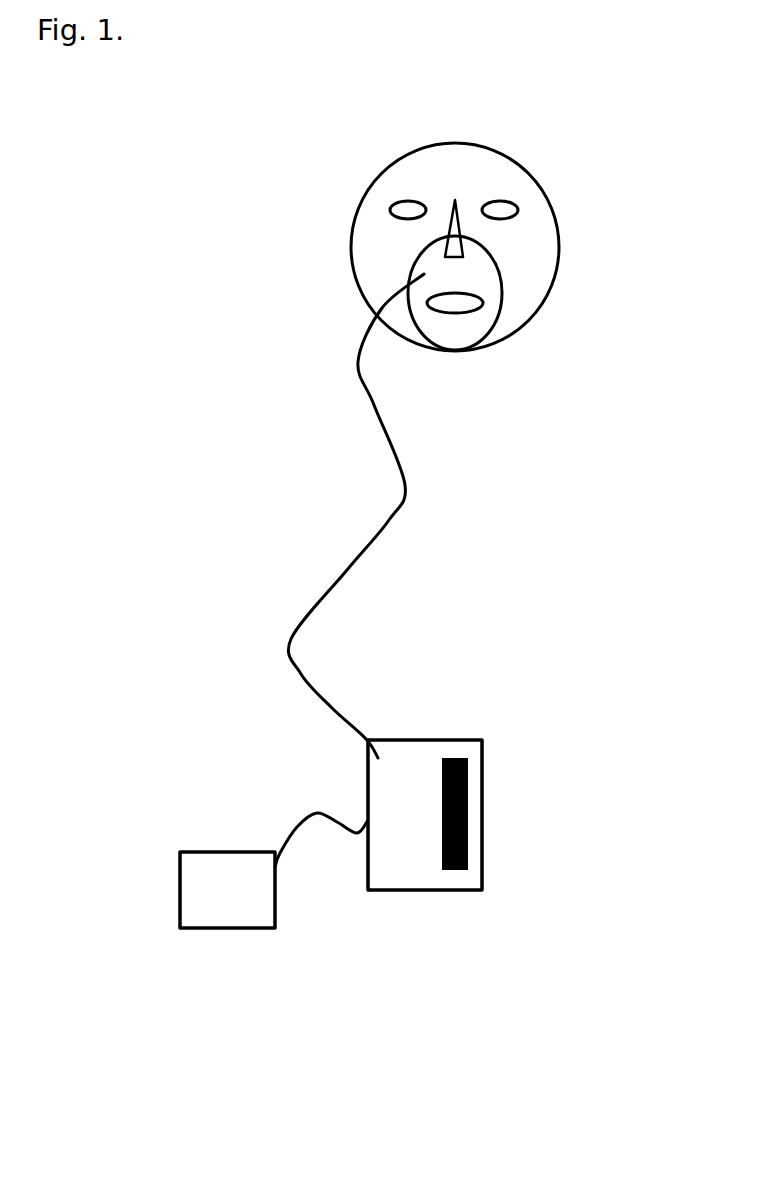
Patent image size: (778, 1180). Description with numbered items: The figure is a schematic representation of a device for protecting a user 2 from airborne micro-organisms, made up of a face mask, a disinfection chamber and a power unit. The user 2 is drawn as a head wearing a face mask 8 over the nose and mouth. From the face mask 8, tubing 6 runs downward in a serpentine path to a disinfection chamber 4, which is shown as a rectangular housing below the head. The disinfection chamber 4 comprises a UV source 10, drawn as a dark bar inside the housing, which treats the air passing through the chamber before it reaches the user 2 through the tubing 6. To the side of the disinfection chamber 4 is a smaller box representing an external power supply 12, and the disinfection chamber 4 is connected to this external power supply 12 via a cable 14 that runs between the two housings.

The user 2 is at (320, 203).
The disinfection chamber 4 is at (493, 802).
The tubing 6 is at (353, 507).
The face mask 8 is at (497, 312).
The UV source 10 is at (470, 871).
The external power supply 12 is at (230, 958).
The cable 14 is at (303, 852).